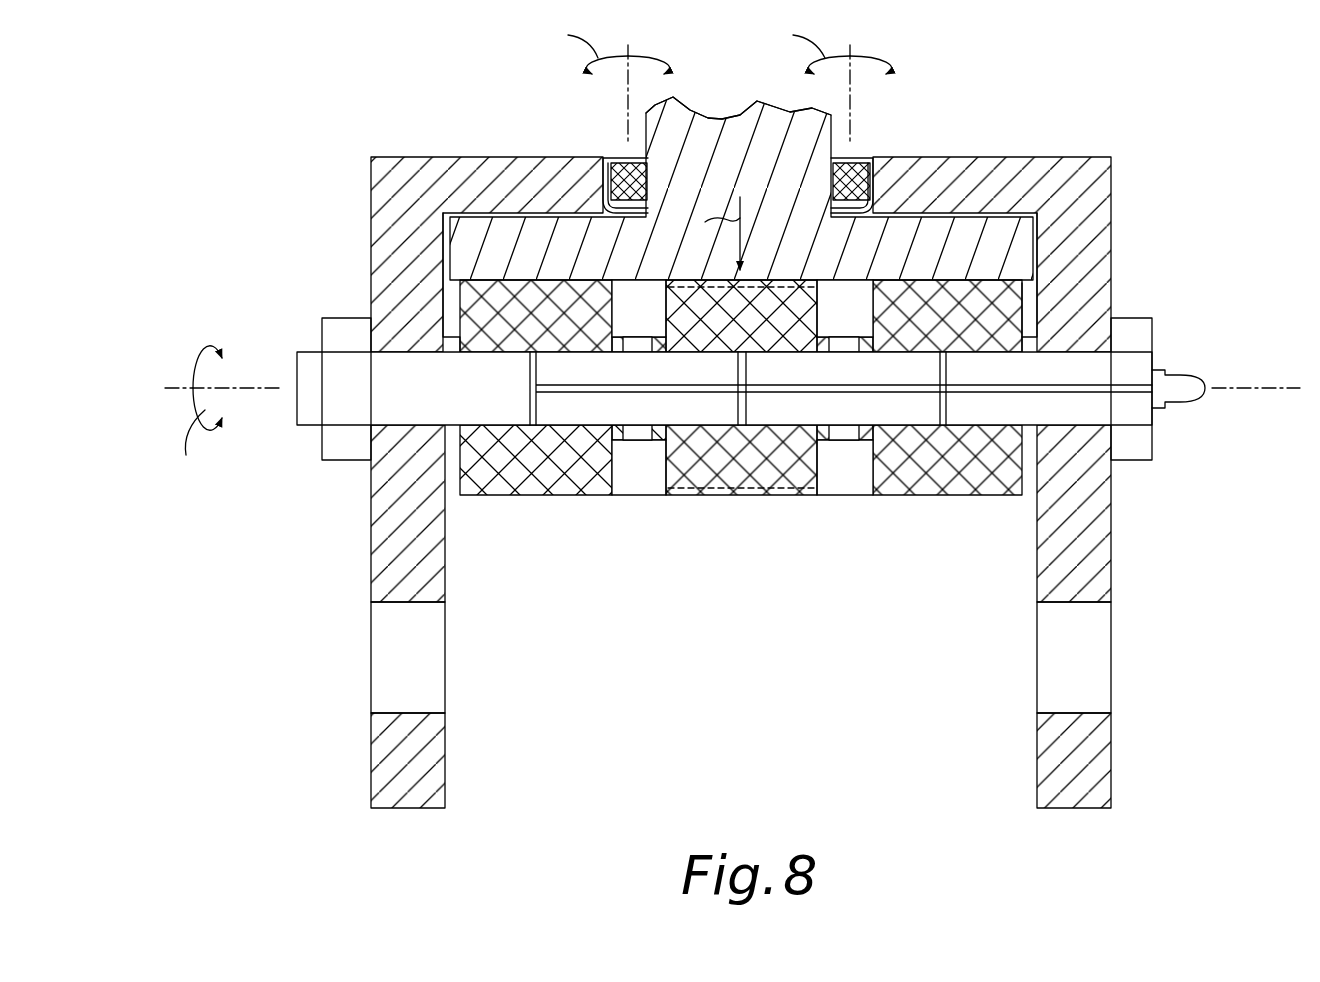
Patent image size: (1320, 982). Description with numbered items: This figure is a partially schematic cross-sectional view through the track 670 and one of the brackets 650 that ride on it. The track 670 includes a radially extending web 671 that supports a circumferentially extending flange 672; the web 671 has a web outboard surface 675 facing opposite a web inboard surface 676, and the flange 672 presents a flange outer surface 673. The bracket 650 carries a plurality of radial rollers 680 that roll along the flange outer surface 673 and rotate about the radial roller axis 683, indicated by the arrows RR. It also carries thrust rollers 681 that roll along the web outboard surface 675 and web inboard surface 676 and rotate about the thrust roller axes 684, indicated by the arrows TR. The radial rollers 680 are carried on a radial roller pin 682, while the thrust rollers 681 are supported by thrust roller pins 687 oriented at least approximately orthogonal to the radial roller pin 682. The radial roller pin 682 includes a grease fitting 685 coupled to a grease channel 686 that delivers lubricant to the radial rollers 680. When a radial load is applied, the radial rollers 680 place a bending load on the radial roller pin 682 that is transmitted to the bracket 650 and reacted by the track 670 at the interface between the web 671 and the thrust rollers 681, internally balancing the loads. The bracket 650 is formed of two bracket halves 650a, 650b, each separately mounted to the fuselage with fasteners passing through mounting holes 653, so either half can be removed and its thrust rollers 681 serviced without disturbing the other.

The bracket 650 is at (1145, 540).
The bracket half 650a is at (1100, 157).
The bracket half 650b is at (352, 160).
The mounting holes 653 is at (385, 640).
The track 670 is at (697, 147).
The web 671 is at (732, 140).
The flange 672 is at (480, 250).
The flange outer surface 673 is at (500, 295).
The web outboard surface 675 is at (647, 142).
The web inboard surface 676 is at (843, 208).
The radial rollers 680 is at (538, 495).
The thrust rollers 681 is at (630, 207).
The radial roller pin 682 is at (1135, 320).
The radial roller axis 683 is at (172, 380).
The thrust roller axes 684 is at (628, 95).
The grease fitting 685 is at (1188, 377).
The grease channel 686 is at (698, 392).
The thrust roller pins 687 is at (858, 207).